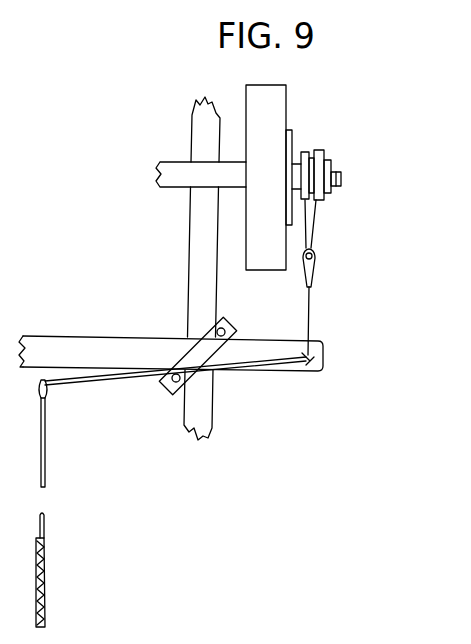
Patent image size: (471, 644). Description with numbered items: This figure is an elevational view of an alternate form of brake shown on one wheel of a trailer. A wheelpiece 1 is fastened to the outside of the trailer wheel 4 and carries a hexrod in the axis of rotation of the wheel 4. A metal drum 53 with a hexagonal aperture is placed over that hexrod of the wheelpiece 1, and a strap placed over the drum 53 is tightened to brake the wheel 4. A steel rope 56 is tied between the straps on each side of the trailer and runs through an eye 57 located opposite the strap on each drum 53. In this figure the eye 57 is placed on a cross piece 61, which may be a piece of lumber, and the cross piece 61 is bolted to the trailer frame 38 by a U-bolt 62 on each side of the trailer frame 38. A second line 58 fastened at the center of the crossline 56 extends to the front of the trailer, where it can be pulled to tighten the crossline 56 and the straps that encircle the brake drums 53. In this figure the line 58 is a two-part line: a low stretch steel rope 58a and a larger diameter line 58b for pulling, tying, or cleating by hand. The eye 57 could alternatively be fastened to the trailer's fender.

The wheelpiece 1 is at (292, 143).
The trailer wheel 4 is at (272, 190).
The trailer frame 38 is at (190, 238).
The metal drum 53 is at (324, 155).
The steel rope 56 is at (310, 297).
The eye 57 is at (326, 363).
The cross piece 61 is at (82, 343).
The U-bolt 62 is at (166, 391).
The second line 58 is at (81, 561).
The low stretch steel rope 58a is at (46, 442).
The larger diameter line 58b is at (48, 581).